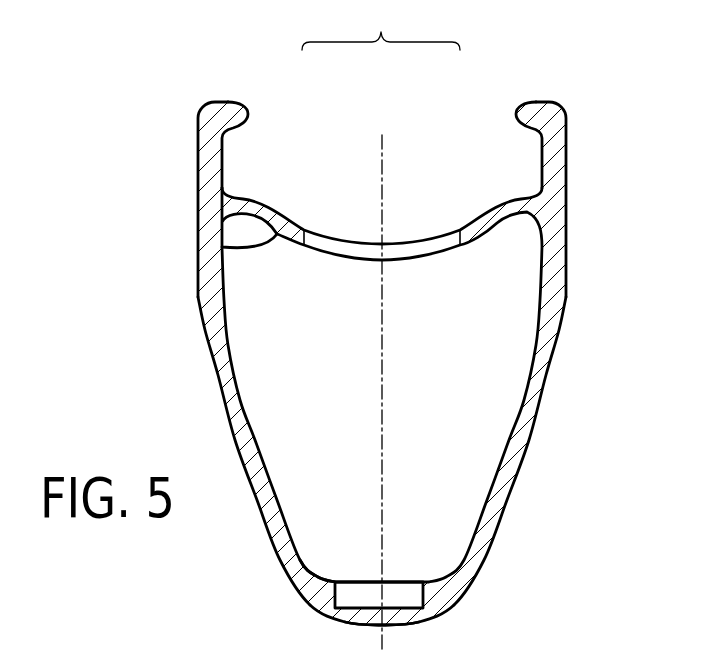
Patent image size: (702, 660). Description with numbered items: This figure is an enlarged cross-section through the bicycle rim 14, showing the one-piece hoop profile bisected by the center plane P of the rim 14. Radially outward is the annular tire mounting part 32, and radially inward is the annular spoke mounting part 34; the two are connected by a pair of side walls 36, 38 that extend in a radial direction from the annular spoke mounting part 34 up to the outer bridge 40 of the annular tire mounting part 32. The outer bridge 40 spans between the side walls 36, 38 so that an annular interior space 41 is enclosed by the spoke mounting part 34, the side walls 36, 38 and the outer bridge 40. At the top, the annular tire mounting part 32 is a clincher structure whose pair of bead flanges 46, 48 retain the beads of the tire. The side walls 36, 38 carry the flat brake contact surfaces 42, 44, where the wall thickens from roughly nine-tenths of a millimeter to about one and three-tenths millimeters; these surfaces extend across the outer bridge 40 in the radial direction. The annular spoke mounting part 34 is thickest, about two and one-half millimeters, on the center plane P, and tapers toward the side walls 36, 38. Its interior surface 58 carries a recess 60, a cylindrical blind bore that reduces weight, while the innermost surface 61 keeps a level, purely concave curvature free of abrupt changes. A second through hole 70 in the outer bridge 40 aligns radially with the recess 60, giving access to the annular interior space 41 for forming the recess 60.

The rim 14 is at (163, 325).
The annular tire mounting part 32 is at (381, 28).
The annular spoke mounting part 34 is at (479, 583).
The side wall 36 is at (228, 412).
The side wall 38 is at (534, 422).
The outer bridge 40 is at (224, 247).
The annular interior space 41 is at (453, 367).
The brake contact surface 42 is at (198, 160).
The brake contact surface 44 is at (566, 160).
The bead flange 46 is at (245, 104).
The bead flange 48 is at (519, 108).
The interior surface 58 is at (328, 565).
The recess 60 is at (394, 606).
The innermost surface 61 is at (382, 626).
The second through hole 70 is at (440, 247).
The center plane P is at (382, 414).